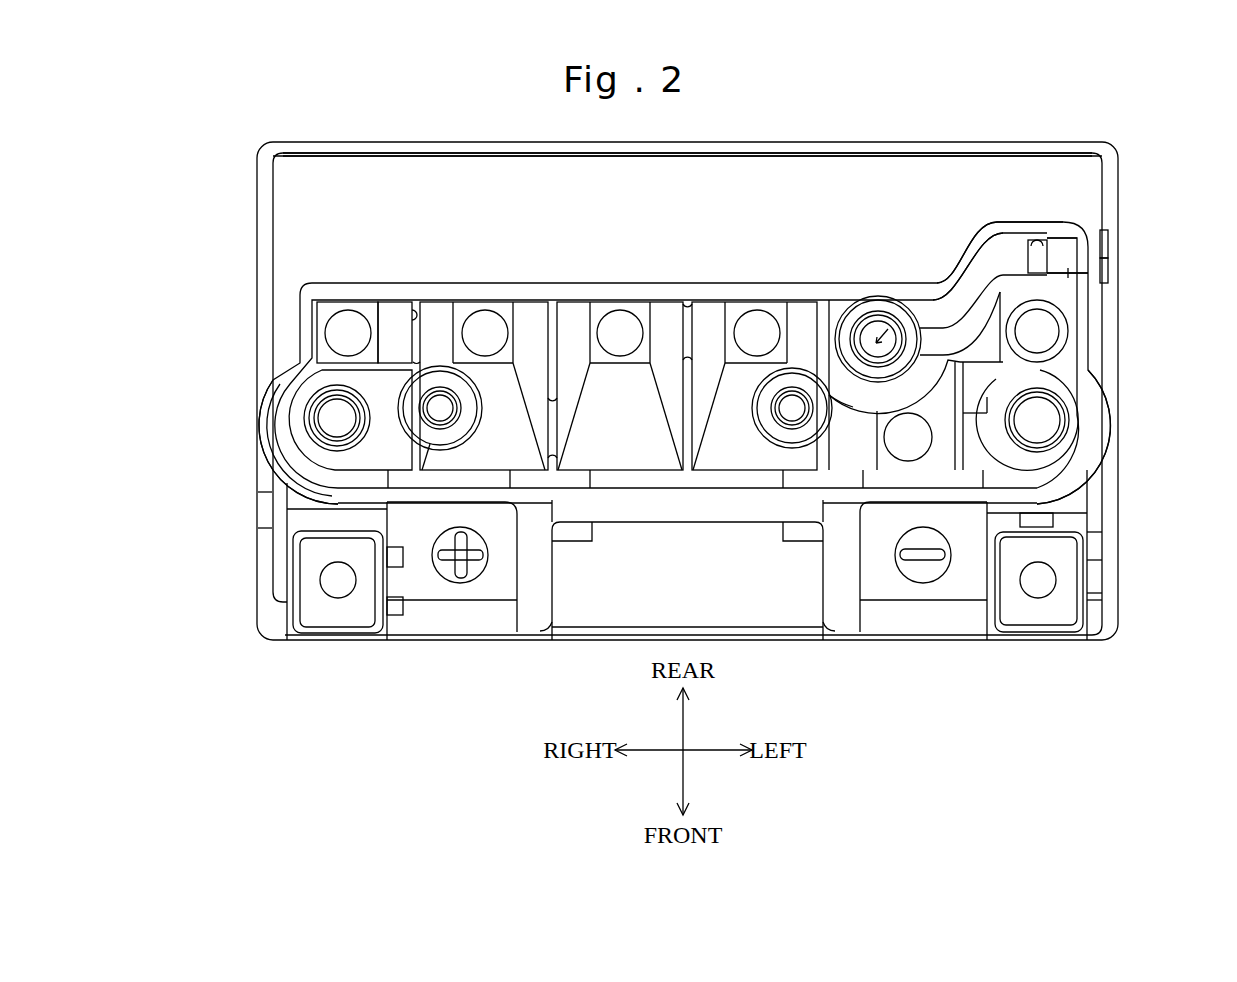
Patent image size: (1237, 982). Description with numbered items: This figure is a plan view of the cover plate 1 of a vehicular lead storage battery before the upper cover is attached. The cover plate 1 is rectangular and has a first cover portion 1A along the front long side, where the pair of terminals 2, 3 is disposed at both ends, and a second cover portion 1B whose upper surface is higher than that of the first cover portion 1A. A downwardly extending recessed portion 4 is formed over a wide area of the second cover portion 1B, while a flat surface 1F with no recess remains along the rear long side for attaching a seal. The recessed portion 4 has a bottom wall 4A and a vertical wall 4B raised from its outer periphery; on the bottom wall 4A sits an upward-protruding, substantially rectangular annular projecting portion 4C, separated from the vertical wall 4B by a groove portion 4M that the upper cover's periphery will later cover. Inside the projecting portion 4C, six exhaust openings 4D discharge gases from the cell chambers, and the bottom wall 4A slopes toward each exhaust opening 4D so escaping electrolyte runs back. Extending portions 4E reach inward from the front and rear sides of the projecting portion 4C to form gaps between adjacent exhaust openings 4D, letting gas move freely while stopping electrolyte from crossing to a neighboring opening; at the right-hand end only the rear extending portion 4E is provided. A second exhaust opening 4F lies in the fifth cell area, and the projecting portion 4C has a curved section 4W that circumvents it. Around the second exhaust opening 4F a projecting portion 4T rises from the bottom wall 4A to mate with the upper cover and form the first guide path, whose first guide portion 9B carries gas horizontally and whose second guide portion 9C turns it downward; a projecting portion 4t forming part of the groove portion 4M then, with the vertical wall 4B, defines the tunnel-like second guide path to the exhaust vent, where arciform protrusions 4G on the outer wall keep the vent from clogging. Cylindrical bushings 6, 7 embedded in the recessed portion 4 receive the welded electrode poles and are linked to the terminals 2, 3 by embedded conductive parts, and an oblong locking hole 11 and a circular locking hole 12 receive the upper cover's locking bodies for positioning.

The cover plate 1 is at (1120, 188).
The flat surface 1F is at (786, 175).
The second cover portion 1B is at (906, 175).
The first cover portion 1A is at (1100, 548).
The terminal 2 is at (340, 612).
The terminal 3 is at (1040, 612).
The recessed portion 4 is at (192, 255).
The bottom wall 4A is at (392, 313).
The vertical wall 4B is at (298, 323).
The projecting portion 4C is at (295, 382).
The exhaust opening 4D is at (333, 338).
The extending portion 4E is at (417, 362).
The second exhaust opening 4F is at (890, 322).
The protrusion 4G is at (1105, 230).
The projecting portion 4T is at (857, 300).
The curved section 4W is at (853, 408).
The groove portion 4M is at (1078, 470).
The projecting portion 4t is at (1068, 270).
The bushing 6 is at (302, 415).
The bushing 7 is at (1062, 390).
The first guide portion 9B is at (975, 280).
The second guide portion 9C is at (1037, 246).
The locking hole 11 is at (447, 410).
The locking hole 12 is at (782, 424).